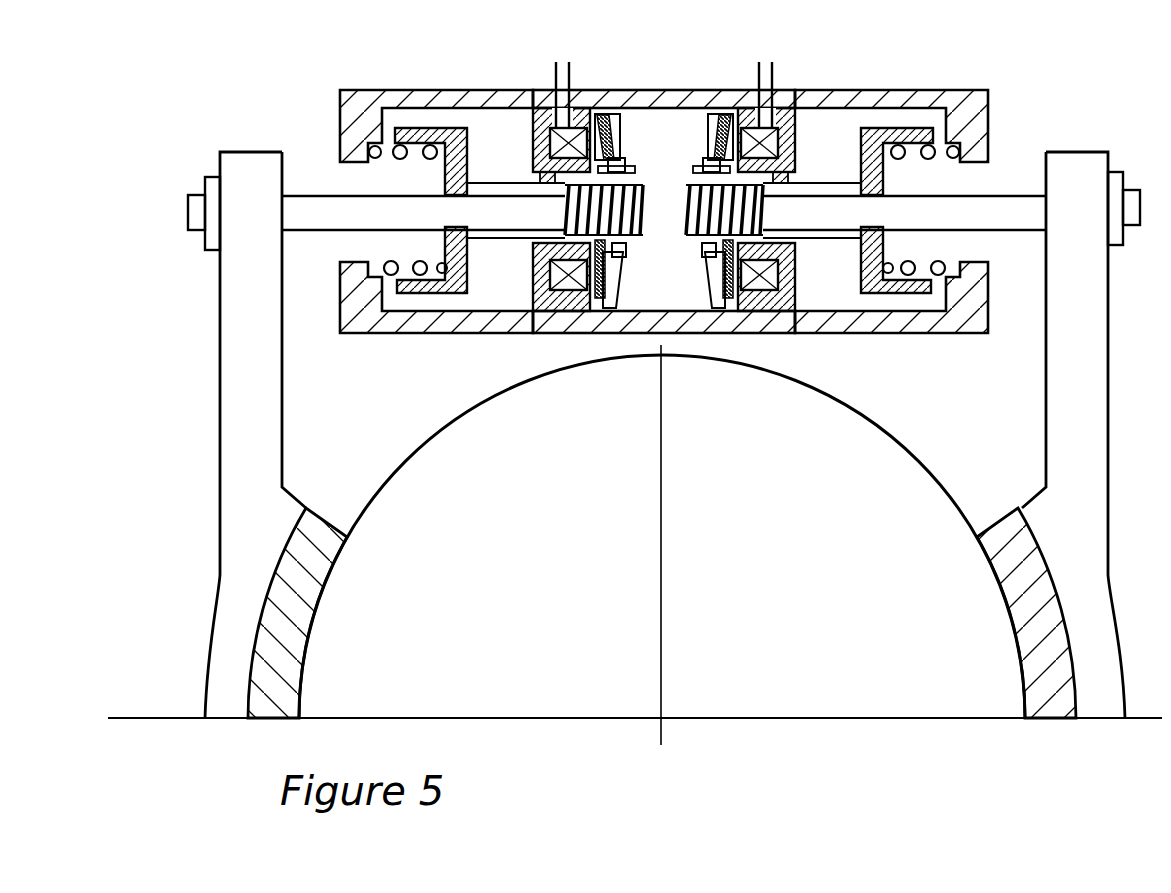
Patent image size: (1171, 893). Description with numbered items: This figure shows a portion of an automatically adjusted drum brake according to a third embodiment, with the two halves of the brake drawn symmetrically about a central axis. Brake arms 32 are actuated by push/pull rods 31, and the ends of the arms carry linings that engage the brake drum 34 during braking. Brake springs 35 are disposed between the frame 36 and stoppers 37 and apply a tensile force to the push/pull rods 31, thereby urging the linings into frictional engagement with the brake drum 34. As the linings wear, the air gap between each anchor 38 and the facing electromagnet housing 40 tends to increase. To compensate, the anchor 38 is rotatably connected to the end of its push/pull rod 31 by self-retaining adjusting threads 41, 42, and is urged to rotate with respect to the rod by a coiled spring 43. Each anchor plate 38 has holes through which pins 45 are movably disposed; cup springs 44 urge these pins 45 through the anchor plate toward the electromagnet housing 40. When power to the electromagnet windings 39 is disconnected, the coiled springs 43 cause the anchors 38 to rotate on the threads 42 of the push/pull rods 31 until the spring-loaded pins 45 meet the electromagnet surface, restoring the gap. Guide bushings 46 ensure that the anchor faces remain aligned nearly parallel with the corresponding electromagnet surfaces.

The push/pull rods 31 is at (996, 196).
The brake arms 32 is at (1063, 378).
The brake drum 34 is at (879, 429).
The brake springs 35 is at (887, 143).
The frame 36 is at (341, 131).
The stoppers 37 is at (447, 188).
The anchor 38 is at (722, 160).
The electromagnet windings 39 is at (522, 162).
The electromagnet housing 40 is at (527, 163).
The threads 41 is at (697, 168).
The threads 42 is at (690, 203).
The coiled springs 43 is at (703, 244).
The cup springs 44 is at (723, 273).
The pins 45 is at (721, 300).
The guide bushings 46 is at (797, 173).